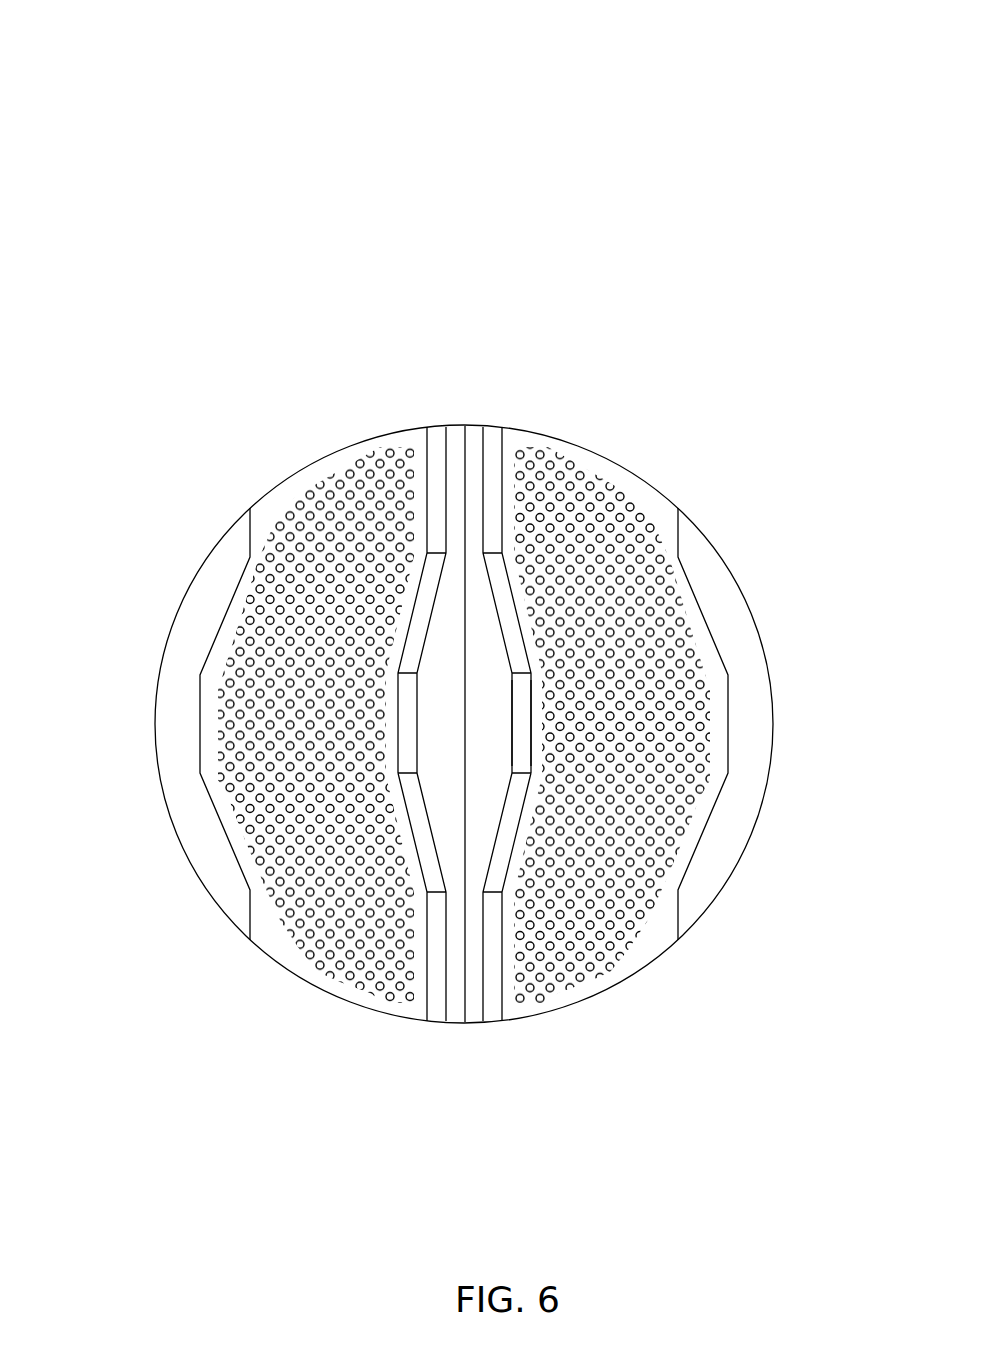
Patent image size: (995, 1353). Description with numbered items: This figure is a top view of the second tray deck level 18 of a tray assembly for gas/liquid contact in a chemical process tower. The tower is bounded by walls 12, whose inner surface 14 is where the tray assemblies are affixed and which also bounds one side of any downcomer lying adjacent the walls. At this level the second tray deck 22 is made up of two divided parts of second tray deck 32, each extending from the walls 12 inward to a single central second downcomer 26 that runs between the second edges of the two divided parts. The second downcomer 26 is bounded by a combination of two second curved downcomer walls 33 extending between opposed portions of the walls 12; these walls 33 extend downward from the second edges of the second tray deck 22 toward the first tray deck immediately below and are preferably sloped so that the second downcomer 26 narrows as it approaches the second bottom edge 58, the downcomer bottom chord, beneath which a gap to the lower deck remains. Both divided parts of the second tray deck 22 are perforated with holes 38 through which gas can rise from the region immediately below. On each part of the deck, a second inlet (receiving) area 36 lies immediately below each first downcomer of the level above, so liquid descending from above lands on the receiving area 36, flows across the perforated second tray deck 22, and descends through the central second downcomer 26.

The walls 12 is at (187, 838).
The inner surface 14 is at (221, 861).
The second tray deck level 18 is at (168, 214).
The second tray deck 22 is at (387, 493).
The second downcomer 26 is at (474, 430).
The divided parts of second tray deck 32 is at (425, 650).
The second curved downcomer wall 33 is at (427, 840).
The second inlet (receiving) area 36 is at (222, 673).
The holes 38 is at (572, 930).
The second bottom edge 58 is at (522, 722).